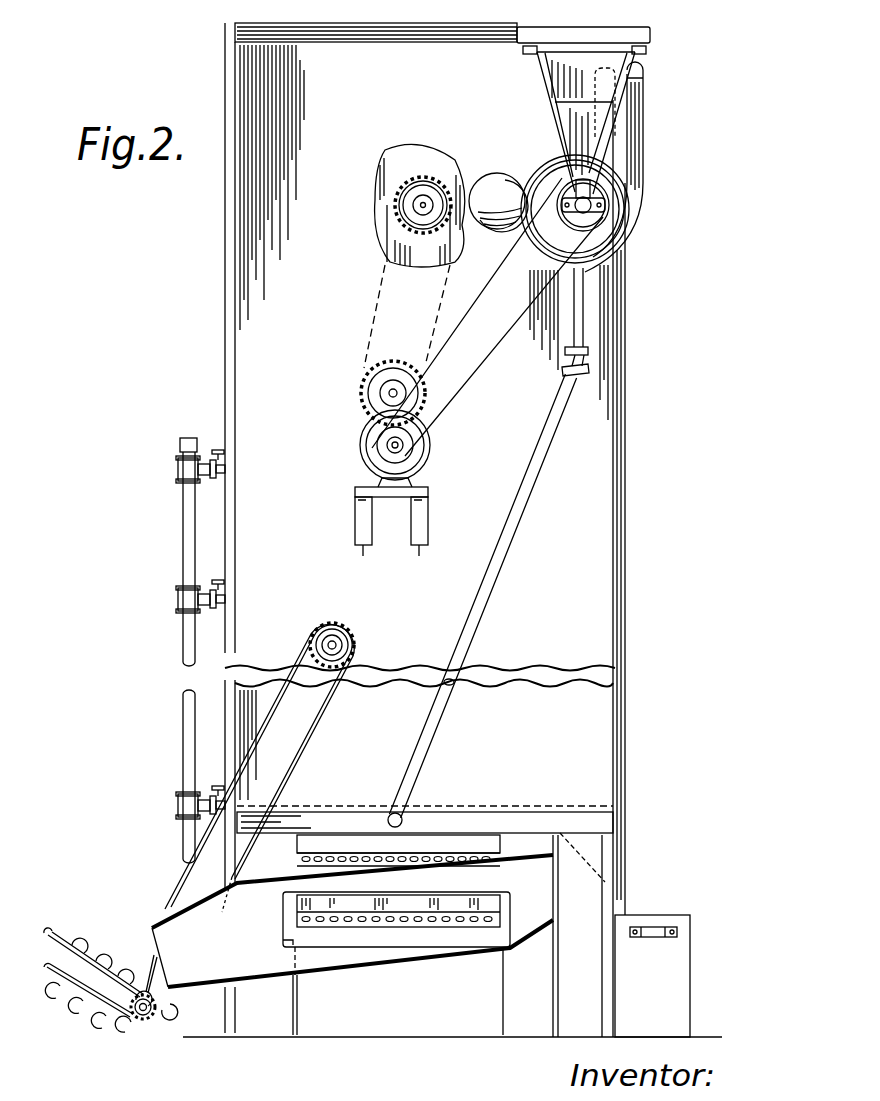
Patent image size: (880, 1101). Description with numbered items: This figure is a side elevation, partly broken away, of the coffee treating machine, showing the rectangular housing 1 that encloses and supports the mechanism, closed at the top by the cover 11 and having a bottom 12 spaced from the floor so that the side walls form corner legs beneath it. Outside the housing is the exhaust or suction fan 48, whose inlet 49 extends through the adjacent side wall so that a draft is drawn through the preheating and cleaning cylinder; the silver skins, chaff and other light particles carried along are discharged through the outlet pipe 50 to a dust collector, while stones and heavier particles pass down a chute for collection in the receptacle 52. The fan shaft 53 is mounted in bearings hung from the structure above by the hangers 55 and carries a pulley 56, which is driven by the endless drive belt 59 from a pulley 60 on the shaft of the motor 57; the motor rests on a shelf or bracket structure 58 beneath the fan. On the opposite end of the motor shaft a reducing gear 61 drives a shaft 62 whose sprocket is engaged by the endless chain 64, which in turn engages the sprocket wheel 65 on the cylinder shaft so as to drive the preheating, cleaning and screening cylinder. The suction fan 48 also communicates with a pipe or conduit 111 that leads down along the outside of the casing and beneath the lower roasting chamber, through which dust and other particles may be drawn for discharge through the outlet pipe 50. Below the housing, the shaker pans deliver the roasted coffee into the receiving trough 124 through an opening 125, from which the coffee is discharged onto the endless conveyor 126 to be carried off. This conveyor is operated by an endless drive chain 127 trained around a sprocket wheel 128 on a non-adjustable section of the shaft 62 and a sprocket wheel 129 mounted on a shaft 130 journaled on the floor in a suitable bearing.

The housing 1 is at (637, 361).
The top or cover 11 is at (412, 28).
The bottom 12 is at (540, 832).
The exhaust or suction fan 48 is at (616, 254).
The inlet 49 is at (505, 190).
The outlet pipe 50 is at (644, 93).
The receptacle 52 is at (652, 976).
The fan shaft 53 is at (606, 221).
The hangers 55 is at (567, 74).
The pulley 56 is at (600, 190).
The motor 57 is at (360, 440).
The shelf or bracket structure 58 is at (390, 497).
The endless drive belt 59 is at (498, 352).
The pulley 60 is at (402, 447).
The reducing gear 61 is at (376, 373).
The shaft 62 is at (392, 393).
The endless drive member or chain 64 is at (452, 256).
The sprocket wheel 65 is at (412, 238).
The pipe or conduit 111 is at (538, 494).
The receiving trough 124 is at (355, 972).
The opening 125 is at (505, 914).
The endless conveyor 126 is at (76, 1003).
The endless drive member or chain 127 is at (183, 882).
The sprocket wheel 128 is at (354, 648).
The sprocket wheel 129 is at (155, 998).
The shaft 130 is at (146, 1011).